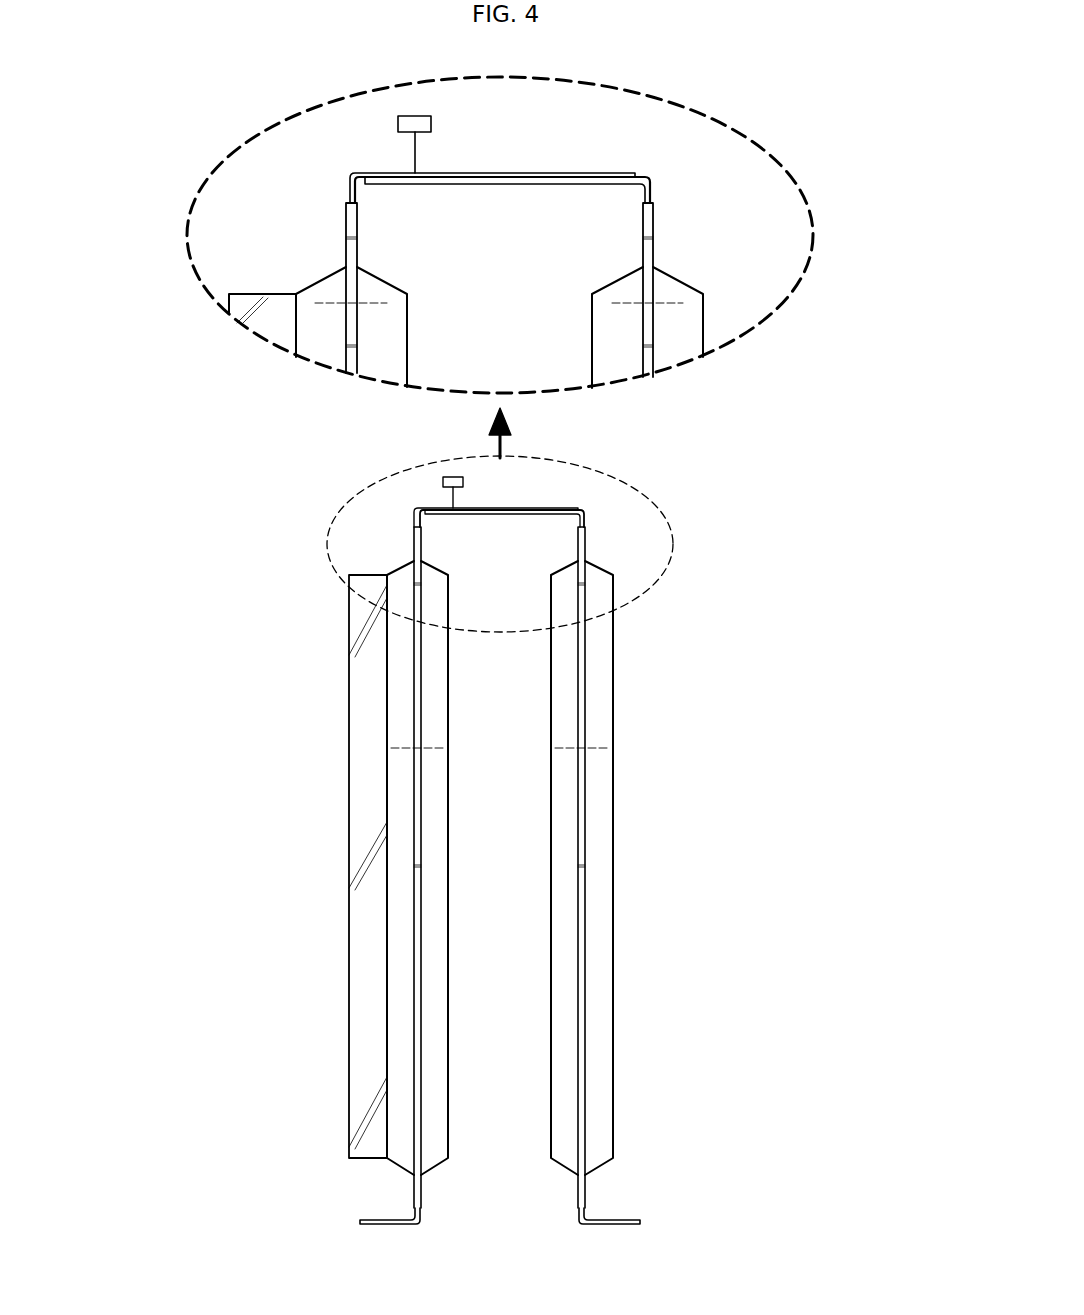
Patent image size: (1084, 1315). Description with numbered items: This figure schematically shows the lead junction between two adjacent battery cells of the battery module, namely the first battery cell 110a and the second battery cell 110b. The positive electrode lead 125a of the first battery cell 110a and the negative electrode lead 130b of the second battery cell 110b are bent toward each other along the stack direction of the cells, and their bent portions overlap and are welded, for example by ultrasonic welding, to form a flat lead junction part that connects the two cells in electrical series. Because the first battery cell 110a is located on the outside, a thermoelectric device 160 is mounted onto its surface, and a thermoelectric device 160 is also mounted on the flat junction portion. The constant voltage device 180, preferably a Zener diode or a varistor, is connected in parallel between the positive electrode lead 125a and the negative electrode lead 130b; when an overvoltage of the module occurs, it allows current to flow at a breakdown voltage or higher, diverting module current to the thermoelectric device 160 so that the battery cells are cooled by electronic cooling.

The first battery cell 110a is at (400, 325).
The second battery cell 110b is at (598, 325).
The positive electrode lead 125a is at (521, 173).
The negative electrode lead 130b is at (520, 185).
The thermoelectric device 160 is at (266, 300).
The constant voltage device 180 is at (431, 124).